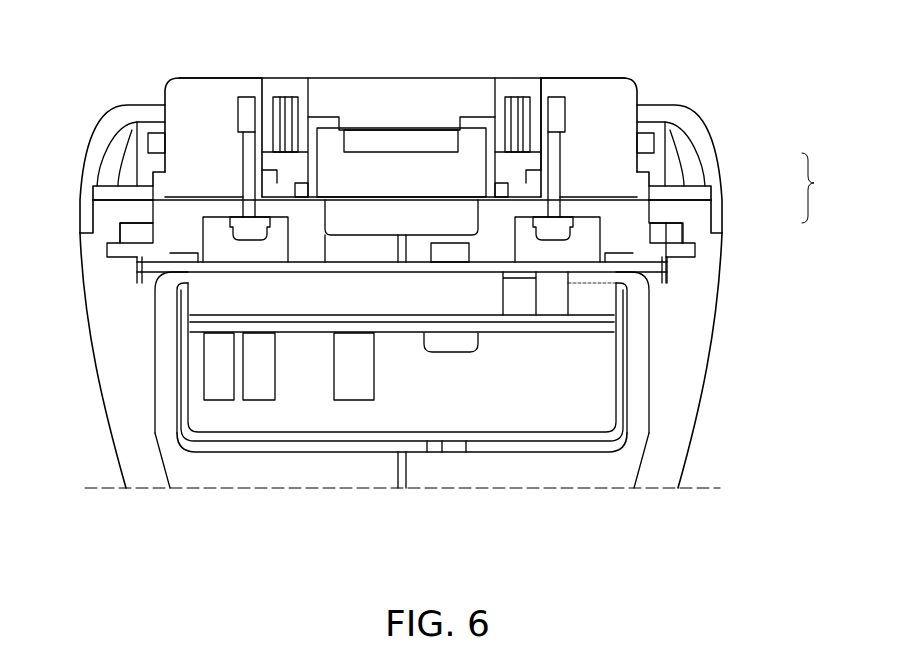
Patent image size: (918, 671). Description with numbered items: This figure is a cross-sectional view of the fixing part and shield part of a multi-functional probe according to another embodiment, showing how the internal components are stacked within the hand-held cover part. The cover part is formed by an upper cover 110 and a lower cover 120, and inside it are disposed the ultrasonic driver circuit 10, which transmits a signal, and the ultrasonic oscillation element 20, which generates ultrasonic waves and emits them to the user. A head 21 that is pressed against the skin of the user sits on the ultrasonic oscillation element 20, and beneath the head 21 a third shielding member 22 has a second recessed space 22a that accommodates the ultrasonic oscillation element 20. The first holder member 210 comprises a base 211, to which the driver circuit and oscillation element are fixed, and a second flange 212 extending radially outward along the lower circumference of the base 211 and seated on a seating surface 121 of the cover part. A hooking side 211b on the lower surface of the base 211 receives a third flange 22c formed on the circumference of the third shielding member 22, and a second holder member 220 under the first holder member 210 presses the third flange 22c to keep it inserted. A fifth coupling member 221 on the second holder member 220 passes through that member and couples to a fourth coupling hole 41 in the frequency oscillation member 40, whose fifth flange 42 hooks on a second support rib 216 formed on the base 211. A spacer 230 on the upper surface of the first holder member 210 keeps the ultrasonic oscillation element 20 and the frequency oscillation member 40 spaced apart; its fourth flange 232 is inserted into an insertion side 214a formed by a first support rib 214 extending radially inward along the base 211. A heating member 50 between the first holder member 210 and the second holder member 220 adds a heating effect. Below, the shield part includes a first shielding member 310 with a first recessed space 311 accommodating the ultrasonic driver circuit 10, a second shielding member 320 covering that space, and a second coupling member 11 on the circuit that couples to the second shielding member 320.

The ultrasonic driver circuit 10 is at (362, 330).
The second coupling member 11 is at (450, 345).
The ultrasonic oscillation element 20 is at (400, 140).
The head 21 is at (356, 86).
The third shielding member 22 is at (480, 118).
The second recessed space 22a is at (434, 170).
The third flange 22c is at (298, 180).
The frequency oscillation member 40 is at (208, 88).
The fourth coupling hole 41 is at (247, 112).
The fifth flange 42 is at (160, 182).
The heating member 50 is at (177, 240).
The upper cover 110 is at (688, 112).
The lower cover 120 is at (685, 380).
The seating surface 121 is at (690, 250).
The first holder member 210 is at (828, 188).
The base 211 is at (655, 160).
The hooking side 211b is at (503, 190).
The second flange 212 is at (689, 218).
The first support rib 214 is at (160, 120).
The insertion side 214a is at (156, 145).
The second support rib 216 is at (155, 162).
The second holder member 220 is at (133, 265).
The fifth coupling member 221 is at (182, 284).
The spacer 230 is at (522, 86).
The fourth flange 232 is at (645, 140).
The first shielding member 310 is at (592, 456).
The first recessed space 311 is at (533, 410).
The second shielding member 320 is at (240, 245).